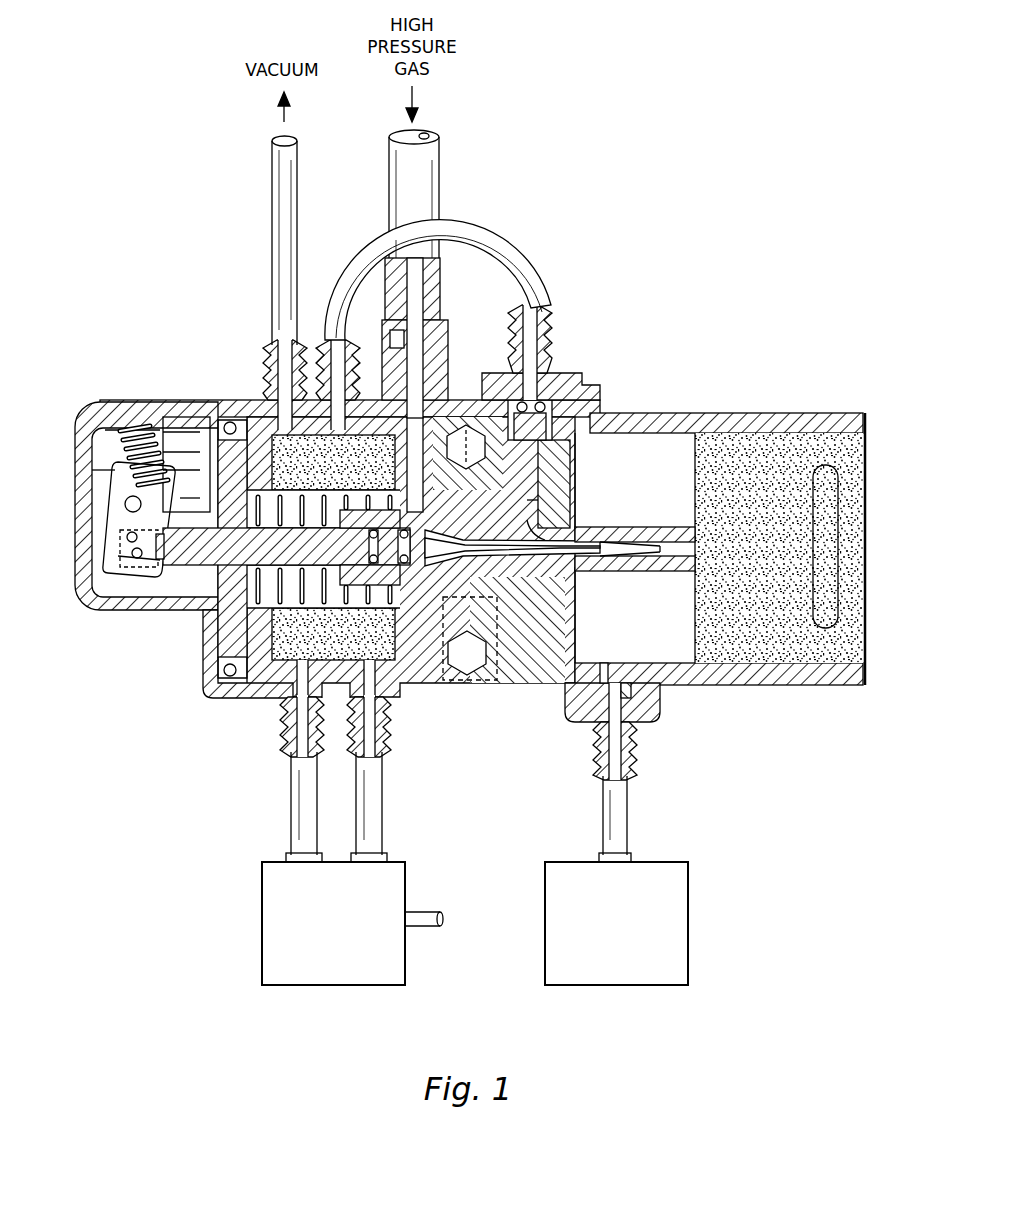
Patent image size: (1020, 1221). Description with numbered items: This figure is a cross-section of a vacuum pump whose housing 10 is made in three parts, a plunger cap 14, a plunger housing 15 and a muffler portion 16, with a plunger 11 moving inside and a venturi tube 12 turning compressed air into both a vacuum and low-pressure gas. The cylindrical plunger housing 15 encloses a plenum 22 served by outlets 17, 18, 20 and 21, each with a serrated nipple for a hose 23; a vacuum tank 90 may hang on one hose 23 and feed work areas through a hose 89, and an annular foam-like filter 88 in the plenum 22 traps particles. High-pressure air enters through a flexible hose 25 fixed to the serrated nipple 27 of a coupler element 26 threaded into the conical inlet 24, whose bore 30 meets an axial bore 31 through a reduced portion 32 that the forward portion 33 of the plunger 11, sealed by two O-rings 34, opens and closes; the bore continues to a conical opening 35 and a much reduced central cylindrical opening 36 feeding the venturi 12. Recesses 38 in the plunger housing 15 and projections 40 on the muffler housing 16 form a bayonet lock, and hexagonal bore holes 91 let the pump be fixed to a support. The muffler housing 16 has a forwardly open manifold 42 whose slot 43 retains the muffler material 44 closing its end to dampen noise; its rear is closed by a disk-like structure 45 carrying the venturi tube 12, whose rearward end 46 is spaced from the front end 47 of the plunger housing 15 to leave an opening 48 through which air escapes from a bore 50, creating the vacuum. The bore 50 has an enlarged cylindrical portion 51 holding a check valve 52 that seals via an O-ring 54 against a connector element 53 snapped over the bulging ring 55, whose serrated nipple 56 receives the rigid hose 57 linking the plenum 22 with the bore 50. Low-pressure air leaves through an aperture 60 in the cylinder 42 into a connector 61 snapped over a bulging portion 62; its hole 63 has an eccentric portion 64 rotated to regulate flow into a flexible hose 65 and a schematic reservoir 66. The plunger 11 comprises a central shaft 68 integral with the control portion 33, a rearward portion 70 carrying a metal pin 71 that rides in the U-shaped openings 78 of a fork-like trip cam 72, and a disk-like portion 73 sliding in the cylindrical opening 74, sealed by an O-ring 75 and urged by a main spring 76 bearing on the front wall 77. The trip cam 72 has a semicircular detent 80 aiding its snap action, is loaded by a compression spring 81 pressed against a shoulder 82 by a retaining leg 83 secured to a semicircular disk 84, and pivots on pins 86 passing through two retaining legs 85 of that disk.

The housing 10 is at (762, 345).
The plunger 11 is at (195, 585).
The venturi tube 12 is at (645, 527).
The plunger cap 14 is at (97, 622).
The plunger housing 15 is at (235, 716).
The muffler portion 16 is at (419, 541).
The outlet 17 is at (266, 346).
The outlet 18 is at (332, 344).
The outlet 20 is at (322, 740).
The outlet 21 is at (392, 745).
The plenum 22 is at (342, 472).
The hose 23 is at (272, 160).
The conical inlet 24 is at (448, 360).
The flexible hose 25 is at (441, 160).
The coupler element 26 is at (448, 334).
The serrated nipple 27 is at (440, 270).
The bore 30 is at (392, 344).
The axial bore 31 is at (428, 565).
The reduced portion 32 is at (410, 566).
The forward portion 33 is at (404, 510).
The O-rings 34 is at (415, 560).
The conical opening 35 is at (380, 538).
The central cylindrical opening 36 is at (412, 560).
The recesses 38 is at (466, 424).
The projections 40 is at (498, 680).
The manifold 42 is at (810, 688).
The slot 43 is at (840, 496).
The muffler material 44 is at (867, 568).
The disk-like structure 45 is at (580, 452).
The rearward end 46 is at (545, 530).
The front end 47 is at (535, 568).
The opening 48 is at (540, 505).
The bore 50 is at (560, 472).
The enlarged cylindrical portion 51 is at (550, 386).
The check valve 52 is at (632, 416).
The connector element 53 is at (548, 358).
The O-ring 54 is at (552, 420).
The outwardly bulging ring 55 is at (582, 390).
The serrated nipple 56 is at (545, 325).
The hose 57 is at (500, 240).
The aperture 60 is at (603, 668).
The connector 61 is at (661, 712).
The outwardly bulging portion 62 is at (570, 715).
The hole 63 is at (625, 684).
The eccentric portion 64 is at (640, 688).
The flexible hose 65 is at (628, 822).
The reservoir 66 is at (688, 920).
The central shaft 68 is at (226, 558).
The rearward portion 70 is at (160, 578).
The metal pin 71 is at (131, 556).
The trip cam 72 is at (108, 470).
The disk-like portion 73 is at (218, 464).
The cylindrical opening 74 is at (250, 418).
The O-ring 75 is at (228, 420).
The main spring 76 is at (255, 520).
The front wall 77 is at (405, 440).
The U-shaped opening 78 is at (126, 538).
The semicircular detent 80 is at (134, 562).
The spring 81 is at (108, 430).
The shoulder 82 is at (124, 428).
The retaining leg 83 is at (185, 408).
The semicircular disk 84 is at (206, 448).
The retaining legs 85 is at (200, 486).
The pins 86 is at (124, 504).
The foam-like filter 88 is at (268, 660).
The hose 89 is at (430, 910).
The vacuum tank 90 is at (262, 920).
The hexagonal bore holes 91 is at (472, 676).